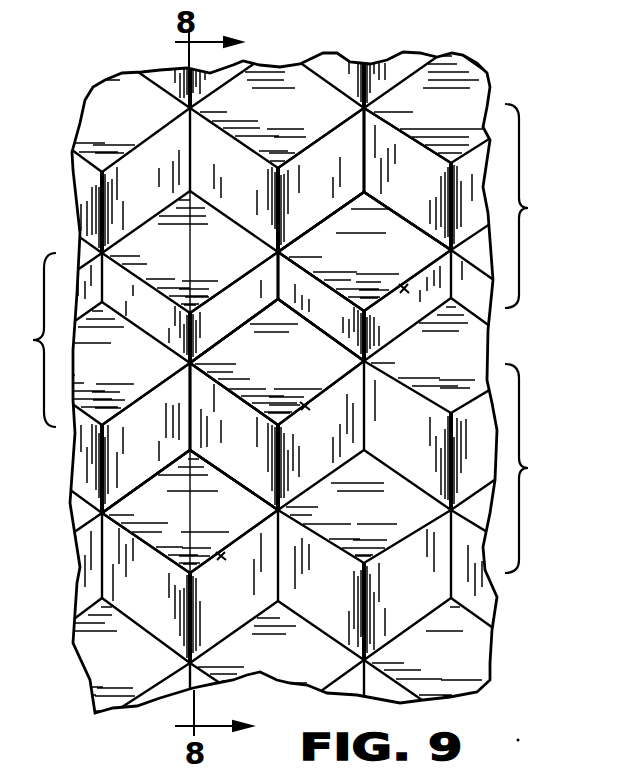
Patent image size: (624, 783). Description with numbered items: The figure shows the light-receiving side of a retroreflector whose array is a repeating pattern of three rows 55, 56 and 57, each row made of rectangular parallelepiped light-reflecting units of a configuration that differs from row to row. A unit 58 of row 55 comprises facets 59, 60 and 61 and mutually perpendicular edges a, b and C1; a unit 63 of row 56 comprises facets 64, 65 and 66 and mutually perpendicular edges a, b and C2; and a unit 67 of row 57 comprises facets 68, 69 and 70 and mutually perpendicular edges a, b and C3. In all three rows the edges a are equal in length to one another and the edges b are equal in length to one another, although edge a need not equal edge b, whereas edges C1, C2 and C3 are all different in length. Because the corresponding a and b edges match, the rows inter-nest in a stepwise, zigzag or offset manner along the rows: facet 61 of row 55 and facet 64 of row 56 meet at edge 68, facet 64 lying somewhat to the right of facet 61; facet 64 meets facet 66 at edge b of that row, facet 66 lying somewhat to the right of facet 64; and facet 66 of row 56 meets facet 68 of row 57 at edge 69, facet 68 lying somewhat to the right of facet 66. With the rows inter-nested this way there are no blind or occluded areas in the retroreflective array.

The row 55 is at (531, 468).
The row 56 is at (30, 340).
The row 57 is at (531, 206).
The light-reflecting unit 58 is at (221, 557).
The facet 59 is at (140, 529).
The facet 60 is at (136, 451).
The facet 61 is at (228, 451).
The light-reflecting unit 63 is at (305, 406).
The facet 64 is at (235, 369).
The facet 65 is at (213, 324).
The facet 66 is at (322, 321).
The light-reflecting unit 67 is at (404, 289).
The facet 68 is at (321, 258).
The facet 69 is at (306, 196).
The facet 70 is at (401, 196).
The edge C1 is at (191, 398).
The edge C2 is at (278, 275).
The edge C3 is at (364, 142).
The edge a is at (333, 212).
The edge b is at (430, 237).